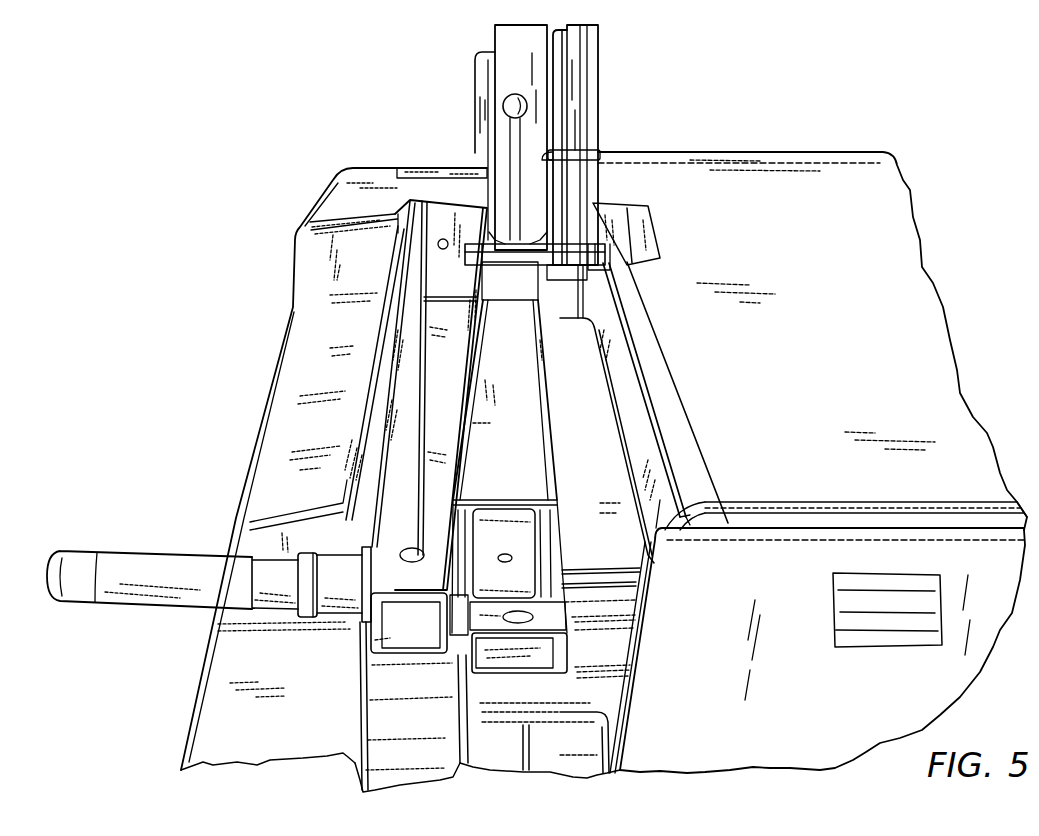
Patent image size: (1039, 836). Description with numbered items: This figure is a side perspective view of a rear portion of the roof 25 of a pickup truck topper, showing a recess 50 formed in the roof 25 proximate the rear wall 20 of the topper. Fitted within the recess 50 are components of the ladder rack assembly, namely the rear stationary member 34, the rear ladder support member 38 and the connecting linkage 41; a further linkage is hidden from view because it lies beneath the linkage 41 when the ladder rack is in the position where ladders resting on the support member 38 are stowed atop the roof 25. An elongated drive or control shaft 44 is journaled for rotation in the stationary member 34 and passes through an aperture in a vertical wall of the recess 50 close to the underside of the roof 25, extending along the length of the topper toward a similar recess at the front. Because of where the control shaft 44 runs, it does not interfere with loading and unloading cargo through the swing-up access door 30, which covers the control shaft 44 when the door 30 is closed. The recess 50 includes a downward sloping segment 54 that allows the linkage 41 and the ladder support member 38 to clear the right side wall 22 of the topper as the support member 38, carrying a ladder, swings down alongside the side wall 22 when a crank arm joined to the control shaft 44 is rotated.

The rear wall 20 is at (272, 370).
The right side wall 22 is at (577, 770).
The roof 25 is at (829, 408).
The swing-up access door 30 is at (829, 701).
The rear stationary member 34 is at (567, 645).
The rear ladder support member 38 is at (547, 420).
The connecting linkage 41 is at (445, 421).
The drive shaft 44 is at (604, 578).
The recess 50 is at (618, 433).
The downward sloping segment 54 is at (420, 758).